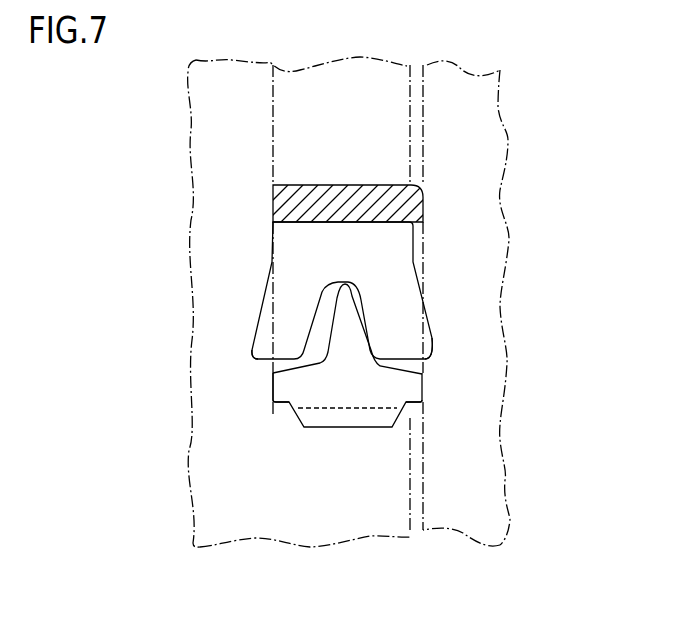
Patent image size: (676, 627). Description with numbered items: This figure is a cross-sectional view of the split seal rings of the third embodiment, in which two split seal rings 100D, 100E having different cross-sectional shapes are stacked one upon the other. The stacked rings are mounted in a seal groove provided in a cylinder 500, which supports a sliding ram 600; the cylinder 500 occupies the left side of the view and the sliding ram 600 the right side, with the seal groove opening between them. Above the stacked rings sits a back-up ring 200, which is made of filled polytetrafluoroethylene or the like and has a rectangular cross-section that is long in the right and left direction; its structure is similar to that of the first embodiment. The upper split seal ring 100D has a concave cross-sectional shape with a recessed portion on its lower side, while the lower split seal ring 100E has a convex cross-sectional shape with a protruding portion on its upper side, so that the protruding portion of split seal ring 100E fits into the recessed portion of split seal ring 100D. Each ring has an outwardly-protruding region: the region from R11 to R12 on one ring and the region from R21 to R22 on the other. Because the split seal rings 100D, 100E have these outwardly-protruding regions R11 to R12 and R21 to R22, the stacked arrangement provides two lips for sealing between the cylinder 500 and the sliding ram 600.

The back-up ring 200 is at (423, 207).
The split seal ring 100D is at (400, 302).
The split seal ring 100E is at (403, 387).
The outwardly-protruding region R11 is at (430, 352).
The outwardly-protruding region R12 is at (423, 400).
The outwardly-protruding region R21 is at (252, 353).
The outwardly-protruding region R22 is at (273, 392).
The cylinder 500 is at (315, 502).
The sliding ram 600 is at (465, 502).